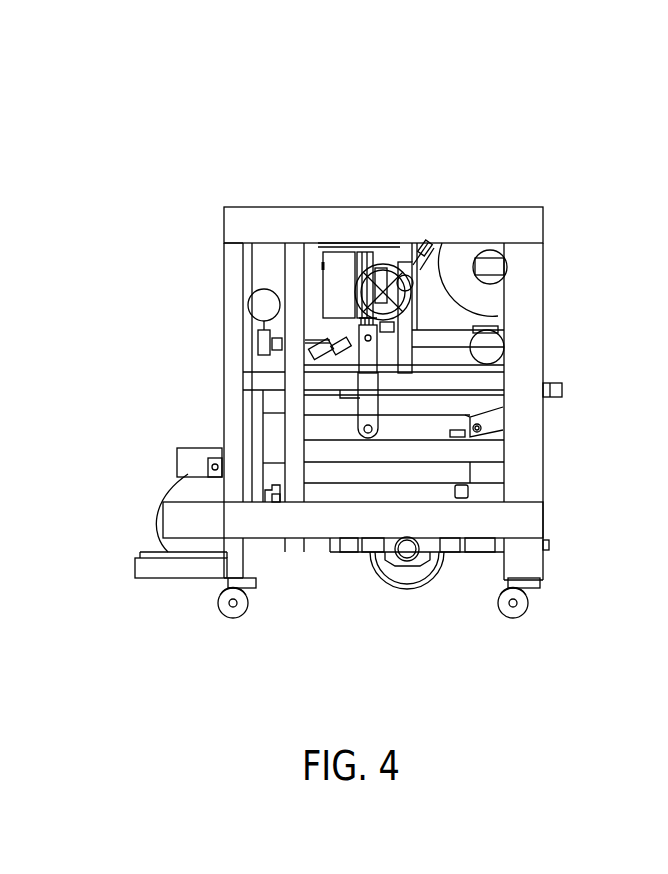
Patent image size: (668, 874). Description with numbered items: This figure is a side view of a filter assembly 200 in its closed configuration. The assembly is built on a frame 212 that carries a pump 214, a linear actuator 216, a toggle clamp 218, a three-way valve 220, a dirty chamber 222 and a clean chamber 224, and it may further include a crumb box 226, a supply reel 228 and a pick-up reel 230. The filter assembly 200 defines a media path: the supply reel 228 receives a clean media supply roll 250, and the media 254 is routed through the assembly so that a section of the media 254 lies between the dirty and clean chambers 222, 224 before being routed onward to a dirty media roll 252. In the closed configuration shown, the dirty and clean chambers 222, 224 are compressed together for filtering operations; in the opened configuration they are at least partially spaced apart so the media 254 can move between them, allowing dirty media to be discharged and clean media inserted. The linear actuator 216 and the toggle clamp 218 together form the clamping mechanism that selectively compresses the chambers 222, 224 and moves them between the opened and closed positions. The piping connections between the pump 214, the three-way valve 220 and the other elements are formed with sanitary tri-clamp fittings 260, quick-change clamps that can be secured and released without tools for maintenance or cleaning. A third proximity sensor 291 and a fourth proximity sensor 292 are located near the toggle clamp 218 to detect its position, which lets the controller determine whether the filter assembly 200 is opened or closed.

The filter assembly 200 is at (520, 112).
The frame 212 is at (518, 348).
The pump 214 is at (403, 575).
The linear actuator 216 is at (448, 332).
The toggle clamp 218 is at (358, 345).
The three-way valve 220 is at (402, 275).
The dirty chamber 222 is at (453, 425).
The clean chamber 224 is at (455, 475).
The crumb box 226 is at (142, 572).
The supply reel 228 is at (487, 255).
The pick-up reel 230 is at (201, 520).
The clean media supply roll 250 is at (457, 267).
The dirty media roll 252 is at (184, 488).
The media 254 is at (252, 262).
The sanitary tri-clamp fitting 260 is at (272, 502).
The third proximity sensor 291 is at (340, 348).
The fourth proximity sensor 292 is at (395, 367).